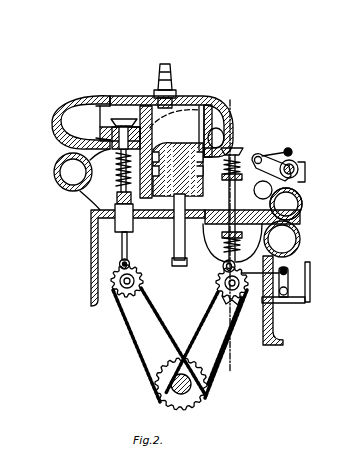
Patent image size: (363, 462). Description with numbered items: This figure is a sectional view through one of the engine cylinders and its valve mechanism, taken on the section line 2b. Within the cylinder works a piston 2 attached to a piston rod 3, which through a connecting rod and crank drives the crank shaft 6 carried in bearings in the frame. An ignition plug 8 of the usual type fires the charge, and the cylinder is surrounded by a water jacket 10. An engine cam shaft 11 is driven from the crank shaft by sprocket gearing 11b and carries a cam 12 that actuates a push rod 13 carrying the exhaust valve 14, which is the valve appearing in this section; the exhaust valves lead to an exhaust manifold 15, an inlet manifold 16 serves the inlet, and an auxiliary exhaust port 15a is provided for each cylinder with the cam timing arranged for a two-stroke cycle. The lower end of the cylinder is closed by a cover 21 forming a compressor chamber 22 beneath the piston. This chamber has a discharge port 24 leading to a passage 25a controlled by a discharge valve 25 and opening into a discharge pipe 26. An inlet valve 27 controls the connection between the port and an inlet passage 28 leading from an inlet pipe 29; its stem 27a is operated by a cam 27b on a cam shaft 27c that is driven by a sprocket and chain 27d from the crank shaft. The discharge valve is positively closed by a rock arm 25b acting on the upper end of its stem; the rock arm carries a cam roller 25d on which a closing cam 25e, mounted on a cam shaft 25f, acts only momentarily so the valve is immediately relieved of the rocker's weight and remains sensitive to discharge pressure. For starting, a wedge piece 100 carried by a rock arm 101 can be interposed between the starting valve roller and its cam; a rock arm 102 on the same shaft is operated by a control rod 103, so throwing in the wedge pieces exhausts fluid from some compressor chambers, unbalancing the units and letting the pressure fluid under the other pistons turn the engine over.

The piston 2 is at (170, 150).
The section line 2—2 (Fig. 2b) 2b is at (230, 100).
The piston rod 3 is at (174, 243).
The crank shaft 6 is at (191, 385).
The ignition plug 8 is at (170, 64).
The water jacket 10 is at (207, 108).
The engine cam shaft 11 is at (98, 283).
The sprocket gearing 11b is at (133, 347).
The cam 12 is at (140, 279).
The push rod 13 is at (122, 250).
The exhaust valve 14 is at (118, 118).
The exhaust manifold 15 is at (62, 130).
The auxiliary exhaust port 15a is at (224, 142).
The inlet manifold 16 is at (62, 177).
The cover 21 is at (133, 223).
The compressor chamber 22 is at (117, 199).
The discharge port 24 is at (300, 199).
The discharge valve 25 is at (238, 153).
The passage 25a is at (291, 150).
The rock arm 25b is at (263, 156).
The cam roller 25d is at (295, 165).
The closing cam 25e is at (299, 170).
The cam shaft 25f is at (306, 176).
The discharge pipe 26 is at (272, 189).
The inlet valve 27 is at (288, 204).
The valve stem 27a is at (223, 265).
The cam 27b is at (228, 301).
The cam shaft 27c is at (218, 283).
The sprocket and chain 27d is at (231, 321).
The inlet passage 28 is at (300, 220).
The inlet pipe 29 is at (297, 239).
The wedge piece 100 is at (262, 270).
The rock arm 101 is at (310, 272).
The rock arm 102 is at (295, 300).
The control rod 103 is at (310, 297).